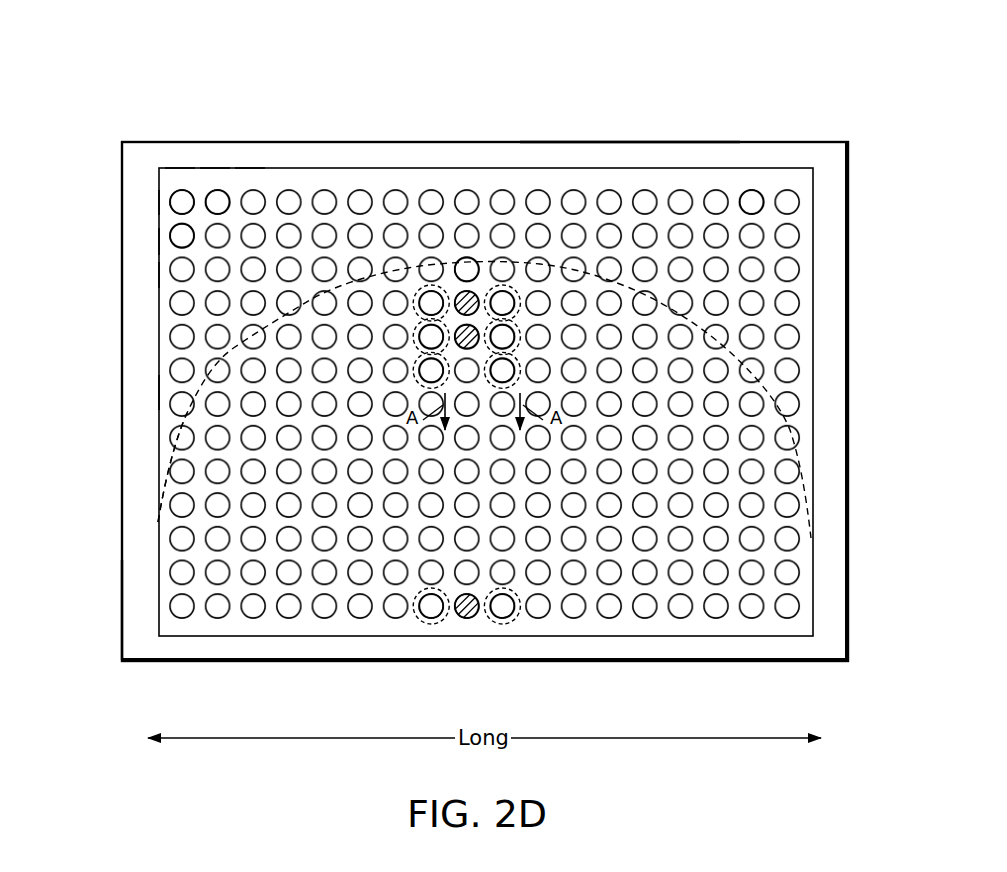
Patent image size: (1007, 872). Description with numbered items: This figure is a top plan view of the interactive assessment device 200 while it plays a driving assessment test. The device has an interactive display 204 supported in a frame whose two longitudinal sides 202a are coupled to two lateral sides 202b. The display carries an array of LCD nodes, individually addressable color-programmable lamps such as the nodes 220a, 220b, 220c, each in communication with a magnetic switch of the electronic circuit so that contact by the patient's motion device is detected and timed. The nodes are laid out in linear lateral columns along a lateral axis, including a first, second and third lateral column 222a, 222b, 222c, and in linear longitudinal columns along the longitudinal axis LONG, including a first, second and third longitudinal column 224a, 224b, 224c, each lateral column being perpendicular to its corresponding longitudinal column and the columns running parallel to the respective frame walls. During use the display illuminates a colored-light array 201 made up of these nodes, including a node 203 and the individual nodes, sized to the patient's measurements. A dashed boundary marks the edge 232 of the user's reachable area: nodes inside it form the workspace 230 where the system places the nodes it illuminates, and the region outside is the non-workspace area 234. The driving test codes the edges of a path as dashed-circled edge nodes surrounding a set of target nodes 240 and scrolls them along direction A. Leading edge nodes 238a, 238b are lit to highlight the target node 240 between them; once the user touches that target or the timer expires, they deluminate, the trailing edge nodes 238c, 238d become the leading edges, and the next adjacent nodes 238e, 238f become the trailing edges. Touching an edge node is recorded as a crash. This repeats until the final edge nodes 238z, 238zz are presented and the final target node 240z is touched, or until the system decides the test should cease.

The interactive assessment device 200 is at (128, 48).
The colored-light array 201 is at (404, 183).
The longitudinal side 202a is at (630, 167).
The lateral side 202b is at (158, 607).
The well 203 is at (455, 283).
The interactive display 204 is at (765, 192).
The LCD node 220a is at (172, 197).
The LCD node 220b is at (224, 198).
The LCD node 220c is at (178, 233).
The first linear lateral column 222a is at (177, 178).
The second linear lateral column 222b is at (215, 178).
The third linear lateral column 222c is at (250, 178).
The first linear longitudinal column 224a is at (160, 202).
The second linear longitudinal column 224b is at (160, 242).
The third linear longitudinal column 224c is at (160, 274).
The workspace 230 is at (158, 519).
The edge of the user's reachable area 232 is at (787, 388).
The non-workspace area 234 is at (158, 392).
The leading edge node 238a is at (416, 292).
The leading edge node 238b is at (517, 292).
The trailing edge node 238c is at (416, 326).
The trailing edge node 238d is at (517, 326).
The next adjacent edge node 238e is at (416, 359).
The next adjacent edge node 238f is at (517, 359).
The final edge node 238z is at (420, 620).
The final edge node 238zz is at (515, 620).
The target node 240 is at (474, 283).
The final target node 240z is at (467, 620).